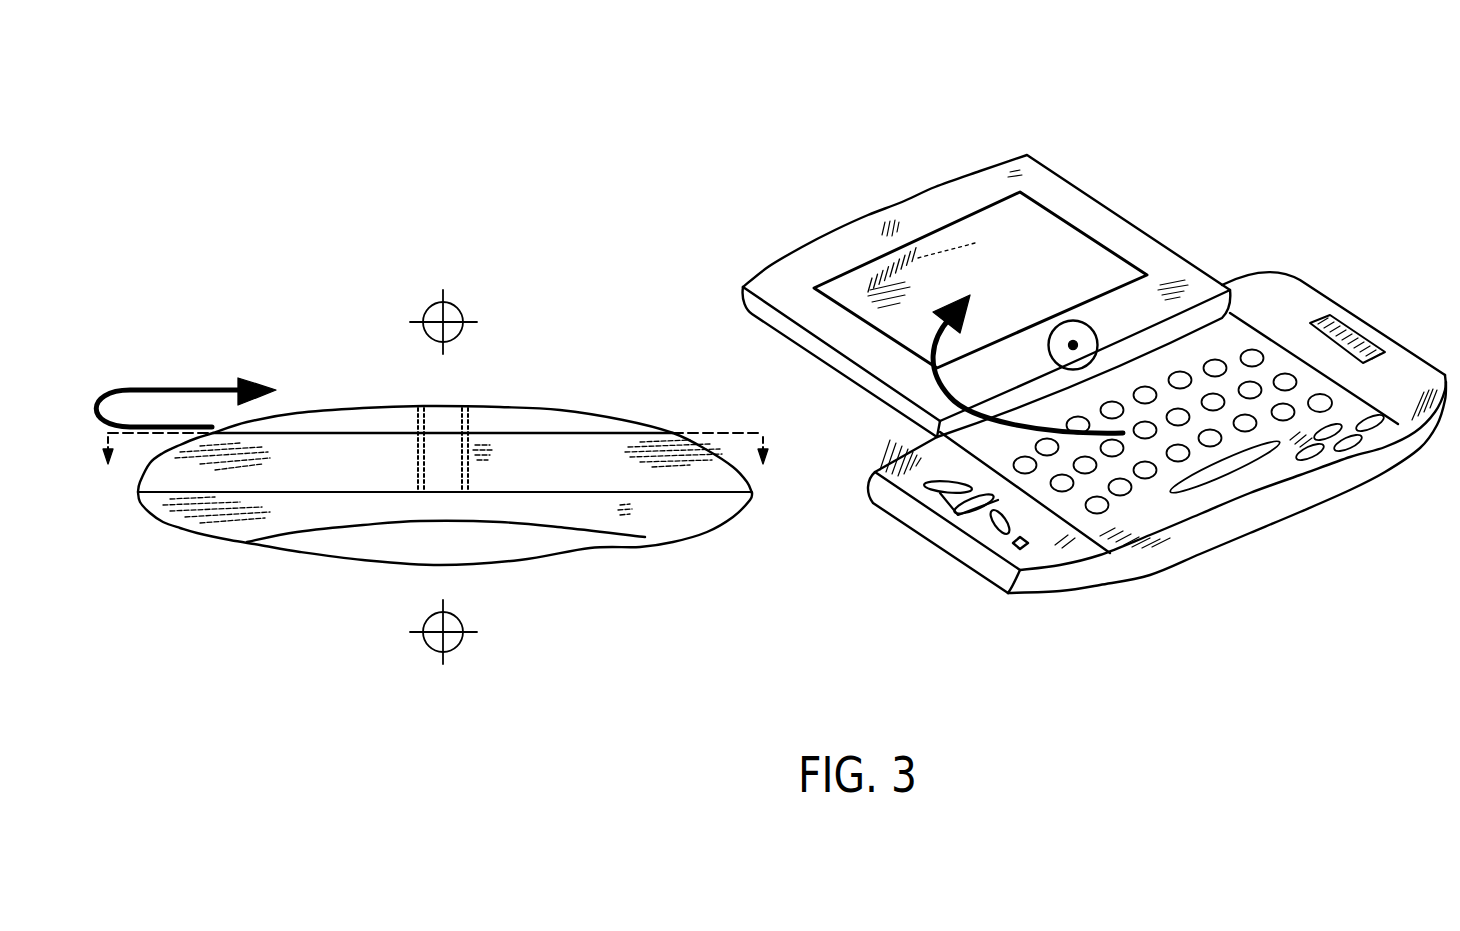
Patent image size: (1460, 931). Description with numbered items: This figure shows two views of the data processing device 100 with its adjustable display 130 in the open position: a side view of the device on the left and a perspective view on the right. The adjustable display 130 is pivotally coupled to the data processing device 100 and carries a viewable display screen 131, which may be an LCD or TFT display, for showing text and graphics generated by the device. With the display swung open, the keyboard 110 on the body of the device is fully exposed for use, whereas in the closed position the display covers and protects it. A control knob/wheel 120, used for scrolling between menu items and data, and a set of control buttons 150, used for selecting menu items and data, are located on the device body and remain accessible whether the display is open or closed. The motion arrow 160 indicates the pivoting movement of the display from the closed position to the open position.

The data processing device 100 is at (846, 585).
The keyboard 110 is at (1240, 463).
The control knob/wheel 120 is at (707, 453).
The adjustable display 130 is at (593, 417).
The viewable display screen 131 is at (994, 240).
The control buttons 150 is at (955, 512).
The motion arrow 160 is at (186, 391).